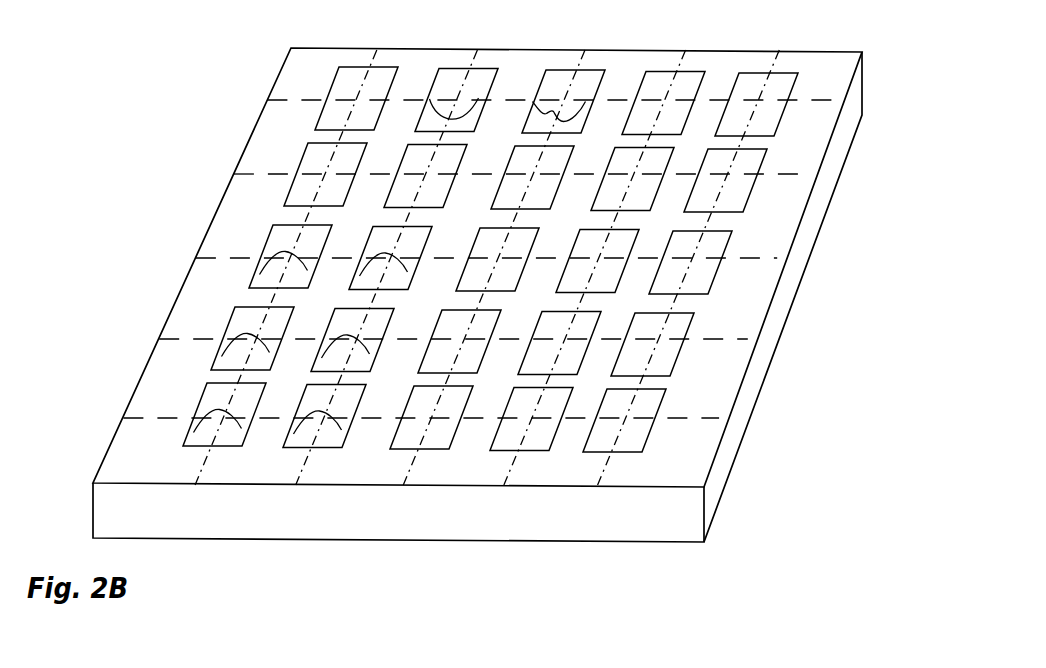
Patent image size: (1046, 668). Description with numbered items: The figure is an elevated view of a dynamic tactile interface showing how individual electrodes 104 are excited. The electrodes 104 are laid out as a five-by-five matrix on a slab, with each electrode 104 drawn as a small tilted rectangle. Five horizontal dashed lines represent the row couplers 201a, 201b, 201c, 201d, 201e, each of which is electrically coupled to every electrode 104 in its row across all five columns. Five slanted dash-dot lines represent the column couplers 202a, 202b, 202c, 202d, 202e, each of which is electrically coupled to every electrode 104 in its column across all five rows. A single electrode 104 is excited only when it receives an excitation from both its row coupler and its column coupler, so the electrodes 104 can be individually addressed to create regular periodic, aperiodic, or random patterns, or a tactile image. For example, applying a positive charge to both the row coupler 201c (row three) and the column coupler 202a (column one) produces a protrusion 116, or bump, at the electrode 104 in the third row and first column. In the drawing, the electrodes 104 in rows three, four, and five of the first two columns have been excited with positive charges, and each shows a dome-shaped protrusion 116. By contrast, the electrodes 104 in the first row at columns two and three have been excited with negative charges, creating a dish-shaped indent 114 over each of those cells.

The electrode 104 is at (290, 190).
The indent 114 is at (433, 111).
The protrusion 116 is at (259, 275).
The row coupler 201a is at (266, 100).
The row coupler 201b is at (233, 174).
The row coupler 201c is at (195, 258).
The row coupler 201d is at (158, 339).
The row coupler 201e is at (123, 418).
The column coupler 202a is at (378, 49).
The column coupler 202b is at (481, 49).
The column coupler 202c is at (587, 49).
The column coupler 202d is at (686, 49).
The column coupler 202e is at (779, 49).